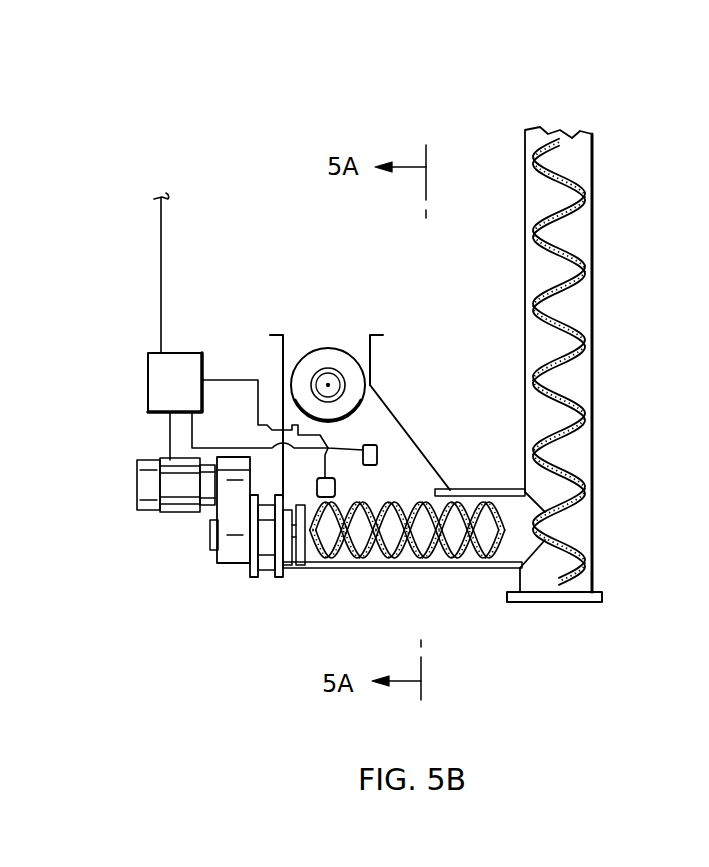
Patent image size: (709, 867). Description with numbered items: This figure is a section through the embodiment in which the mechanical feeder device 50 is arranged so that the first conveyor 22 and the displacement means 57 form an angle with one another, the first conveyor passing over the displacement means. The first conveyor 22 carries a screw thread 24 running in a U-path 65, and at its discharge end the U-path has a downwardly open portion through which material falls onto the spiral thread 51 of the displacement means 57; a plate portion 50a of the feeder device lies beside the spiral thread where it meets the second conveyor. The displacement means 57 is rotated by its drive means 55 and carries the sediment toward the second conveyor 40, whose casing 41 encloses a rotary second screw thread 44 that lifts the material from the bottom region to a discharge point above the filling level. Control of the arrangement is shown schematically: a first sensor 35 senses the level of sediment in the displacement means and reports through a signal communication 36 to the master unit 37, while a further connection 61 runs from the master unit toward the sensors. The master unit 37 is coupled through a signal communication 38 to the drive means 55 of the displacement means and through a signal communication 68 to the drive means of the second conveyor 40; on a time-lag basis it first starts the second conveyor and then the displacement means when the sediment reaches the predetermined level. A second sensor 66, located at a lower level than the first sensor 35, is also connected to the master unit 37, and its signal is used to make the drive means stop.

The first conveyor 22 is at (311, 328).
The screw thread 24 is at (340, 352).
The first sensor 35 is at (378, 450).
The signal communication 36 is at (196, 438).
The master unit 37 is at (183, 350).
The signal communication 38 is at (168, 432).
The second conveyor 40 is at (593, 172).
The casing 41 is at (583, 237).
The second screw thread 44 is at (583, 293).
The mechanical feeder device 50 is at (387, 403).
The trough top plate 50a is at (490, 489).
The spiral thread 51 is at (383, 572).
The drive means 55 is at (178, 512).
The displacement means 57 is at (415, 570).
The wire 61 is at (243, 378).
The U-path 65 is at (372, 352).
The second sensor 66 is at (322, 497).
The signal communication 68 is at (163, 235).